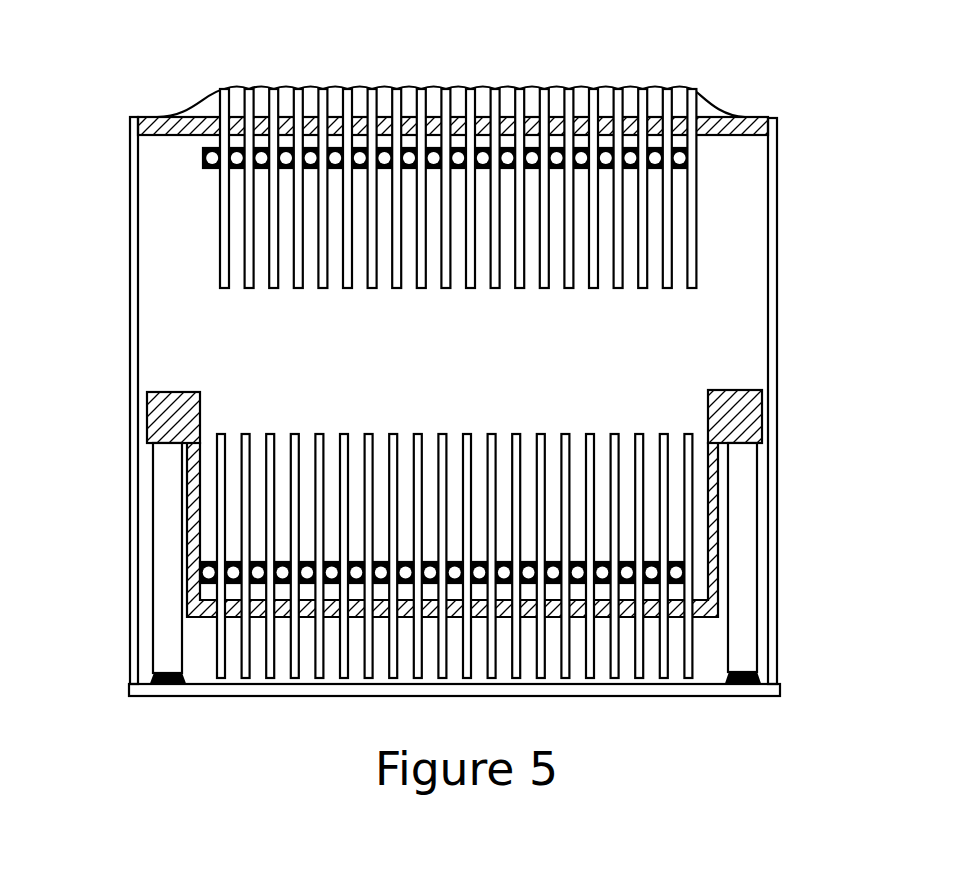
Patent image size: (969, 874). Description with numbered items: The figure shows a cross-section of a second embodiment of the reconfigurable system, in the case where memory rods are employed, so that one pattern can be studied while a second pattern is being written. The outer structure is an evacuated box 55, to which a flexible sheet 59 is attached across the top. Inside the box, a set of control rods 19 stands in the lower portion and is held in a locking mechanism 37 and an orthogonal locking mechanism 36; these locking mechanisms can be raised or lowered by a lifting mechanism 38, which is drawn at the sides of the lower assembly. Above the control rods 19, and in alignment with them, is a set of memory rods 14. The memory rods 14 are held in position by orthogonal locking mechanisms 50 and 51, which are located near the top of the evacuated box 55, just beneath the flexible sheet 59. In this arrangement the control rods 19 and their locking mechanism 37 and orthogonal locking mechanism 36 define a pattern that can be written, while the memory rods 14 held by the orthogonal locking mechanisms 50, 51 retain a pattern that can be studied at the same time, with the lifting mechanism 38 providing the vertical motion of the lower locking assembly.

The evacuated box 55 is at (128, 330).
The flexible sheet 59 is at (212, 98).
The orthogonal locking mechanism 50 is at (727, 119).
The orthogonal locking mechanism 51 is at (687, 157).
The memory rods 14 is at (696, 243).
The control rods 19 is at (667, 437).
The locking mechanism 37 is at (683, 563).
The orthogonal locking mechanism 36 is at (703, 600).
The lifting mechanism 38 is at (163, 517).